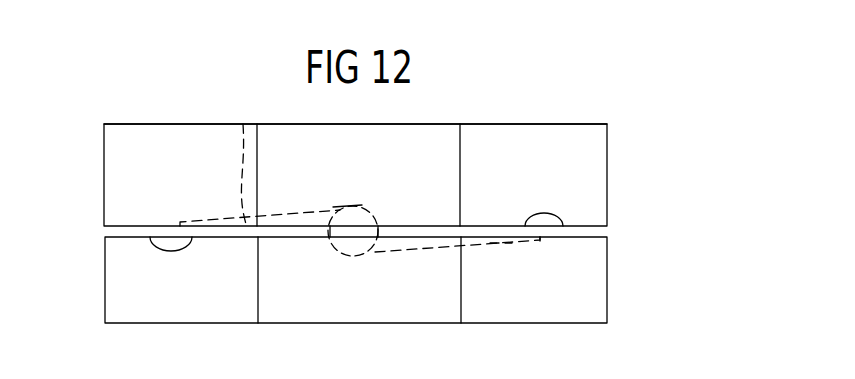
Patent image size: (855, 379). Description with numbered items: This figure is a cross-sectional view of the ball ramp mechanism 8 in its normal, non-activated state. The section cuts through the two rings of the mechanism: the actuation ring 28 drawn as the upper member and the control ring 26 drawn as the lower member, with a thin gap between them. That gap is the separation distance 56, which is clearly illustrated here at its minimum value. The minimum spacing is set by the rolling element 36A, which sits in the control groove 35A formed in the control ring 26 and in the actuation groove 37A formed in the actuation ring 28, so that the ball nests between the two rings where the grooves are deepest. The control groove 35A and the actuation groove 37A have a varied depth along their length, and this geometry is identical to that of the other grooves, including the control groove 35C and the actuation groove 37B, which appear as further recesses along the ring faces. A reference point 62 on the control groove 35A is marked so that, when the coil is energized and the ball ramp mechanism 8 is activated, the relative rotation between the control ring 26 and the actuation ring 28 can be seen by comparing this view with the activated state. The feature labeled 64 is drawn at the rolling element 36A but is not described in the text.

The ball ramp mechanism 8 is at (600, 88).
The actuation ring 28 is at (598, 154).
The control ring 26 is at (598, 272).
The separation distance 56 is at (605, 228).
The rolling element 36A is at (345, 222).
The recess 64 is at (358, 208).
The reference point 62 is at (357, 256).
The actuation groove 37A is at (243, 122).
The actuation groove 37B is at (556, 213).
The control groove 35C is at (155, 247).
The control groove 35A is at (492, 243).